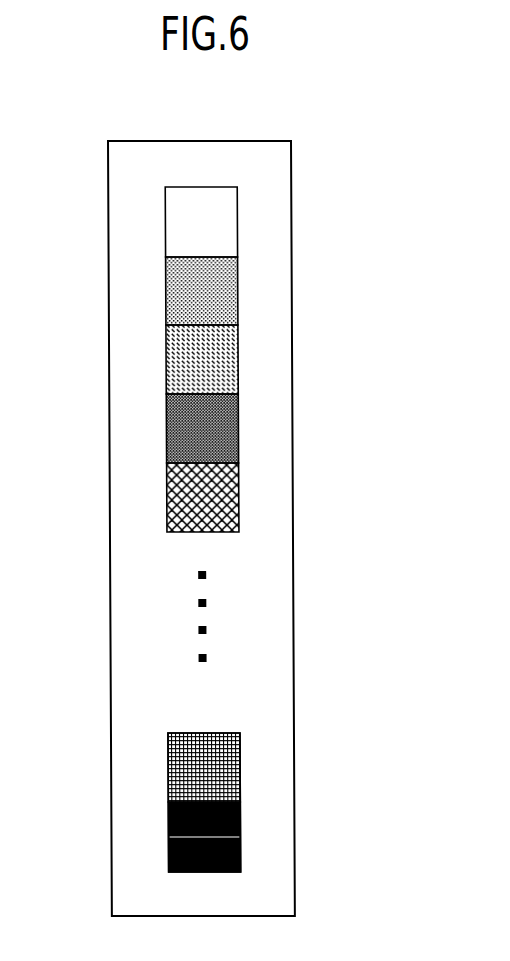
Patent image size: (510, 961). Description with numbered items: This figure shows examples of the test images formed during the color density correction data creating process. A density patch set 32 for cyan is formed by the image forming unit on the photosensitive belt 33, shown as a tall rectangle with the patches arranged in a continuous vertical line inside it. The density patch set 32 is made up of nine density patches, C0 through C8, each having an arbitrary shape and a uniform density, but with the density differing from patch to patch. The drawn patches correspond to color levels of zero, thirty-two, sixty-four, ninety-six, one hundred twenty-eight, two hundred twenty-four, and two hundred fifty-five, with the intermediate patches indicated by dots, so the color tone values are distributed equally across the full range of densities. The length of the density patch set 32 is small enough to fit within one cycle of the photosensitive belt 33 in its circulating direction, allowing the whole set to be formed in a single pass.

The photosensitive belt 33 is at (291, 628).
The density patch set 32 is at (165, 837).